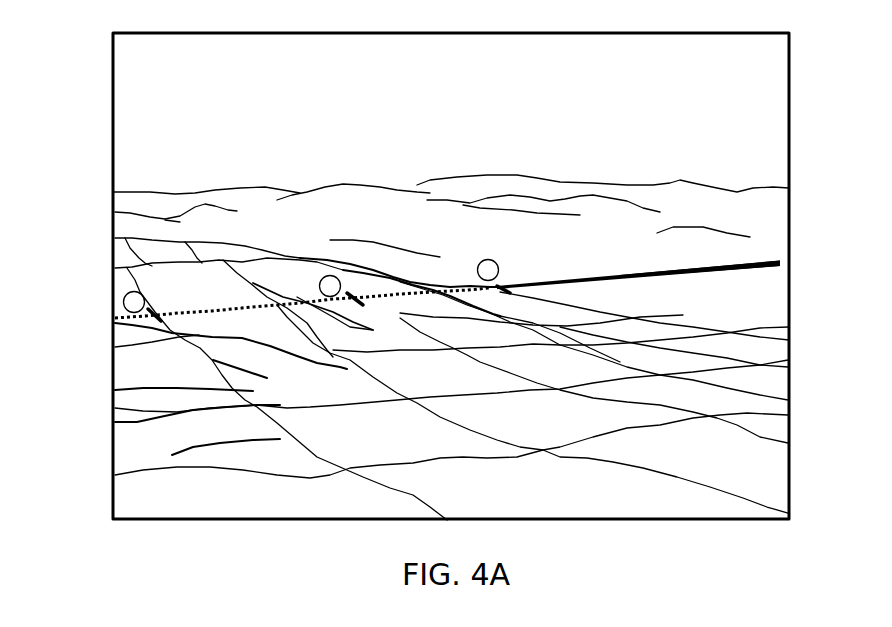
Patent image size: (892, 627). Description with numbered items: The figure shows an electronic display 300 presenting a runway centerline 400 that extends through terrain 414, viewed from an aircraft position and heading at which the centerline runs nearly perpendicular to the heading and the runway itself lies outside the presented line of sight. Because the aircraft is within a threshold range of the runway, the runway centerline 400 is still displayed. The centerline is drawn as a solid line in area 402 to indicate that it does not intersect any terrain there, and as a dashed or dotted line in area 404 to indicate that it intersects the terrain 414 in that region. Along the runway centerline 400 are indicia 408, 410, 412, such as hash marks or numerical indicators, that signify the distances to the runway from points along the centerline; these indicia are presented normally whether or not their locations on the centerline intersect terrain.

The electronic display 300 is at (125, 33).
The runway centerline 400 is at (638, 259).
The area 402 is at (696, 255).
The area 404 is at (302, 317).
The indicia 408 is at (512, 266).
The indicia 410 is at (366, 327).
The indicia 412 is at (159, 295).
The terrain 414 is at (195, 389).